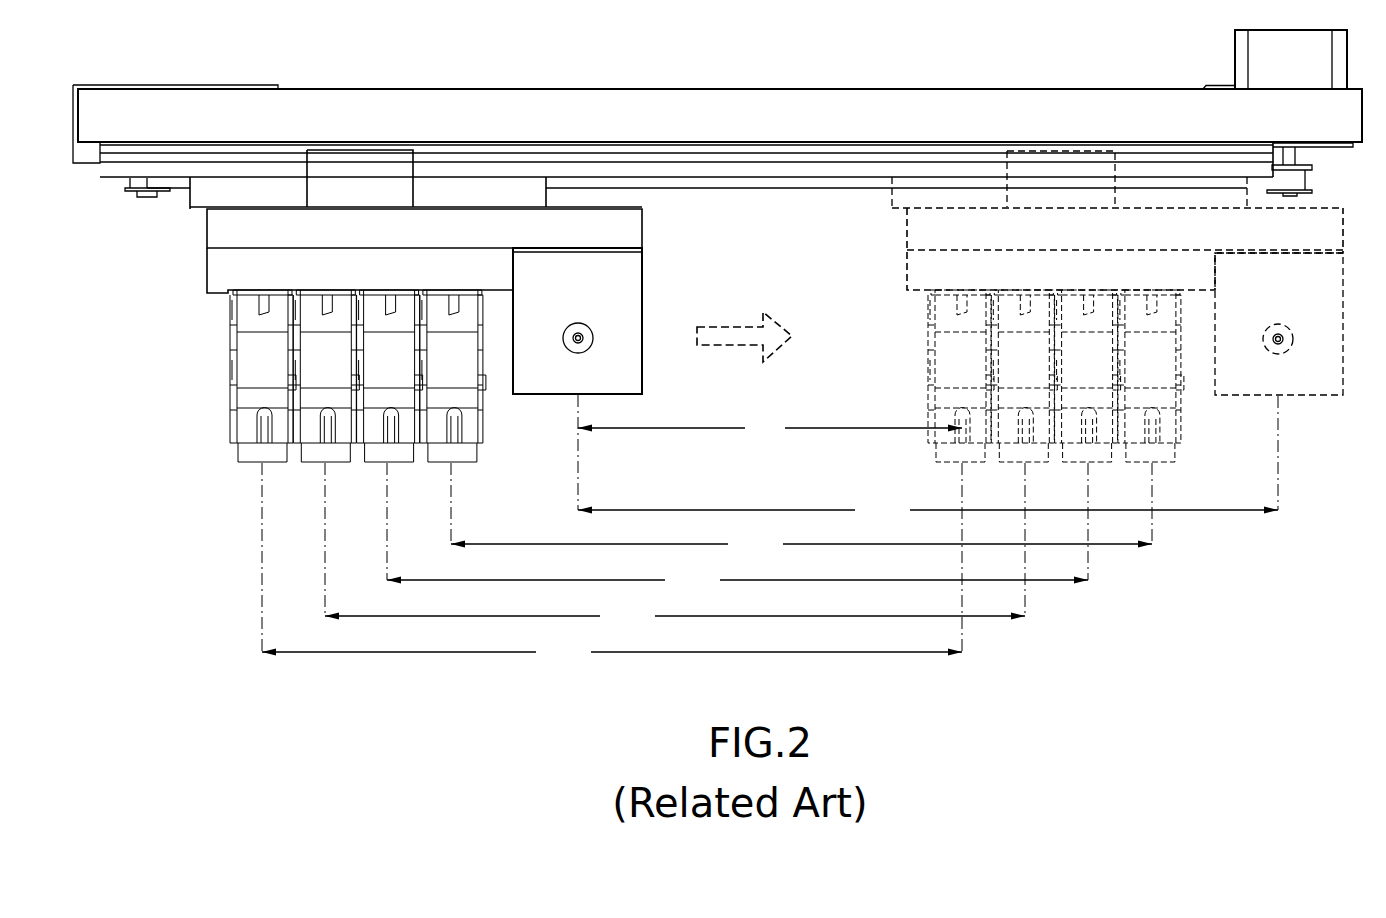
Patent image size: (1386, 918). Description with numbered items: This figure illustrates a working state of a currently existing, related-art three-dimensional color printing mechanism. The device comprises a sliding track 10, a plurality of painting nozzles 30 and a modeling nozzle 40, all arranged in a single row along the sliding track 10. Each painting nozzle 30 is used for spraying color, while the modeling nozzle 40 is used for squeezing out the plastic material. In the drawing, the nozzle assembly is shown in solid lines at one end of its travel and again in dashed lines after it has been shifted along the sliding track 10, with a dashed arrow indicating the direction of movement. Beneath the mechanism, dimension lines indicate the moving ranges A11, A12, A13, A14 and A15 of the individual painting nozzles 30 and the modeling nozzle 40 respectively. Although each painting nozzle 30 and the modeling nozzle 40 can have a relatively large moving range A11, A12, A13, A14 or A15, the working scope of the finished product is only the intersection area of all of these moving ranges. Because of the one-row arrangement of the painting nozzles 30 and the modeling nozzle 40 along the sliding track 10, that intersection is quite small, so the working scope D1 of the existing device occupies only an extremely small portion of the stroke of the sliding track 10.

The sliding track 10 is at (736, 116).
The painting nozzle 30 is at (245, 452).
The modeling nozzle 40 is at (620, 288).
The working scope D1 is at (770, 428).
The moving range A11 is at (612, 652).
The moving range A12 is at (675, 616).
The moving range A13 is at (737, 580).
The moving range A14 is at (801, 544).
The moving range A15 is at (928, 510).